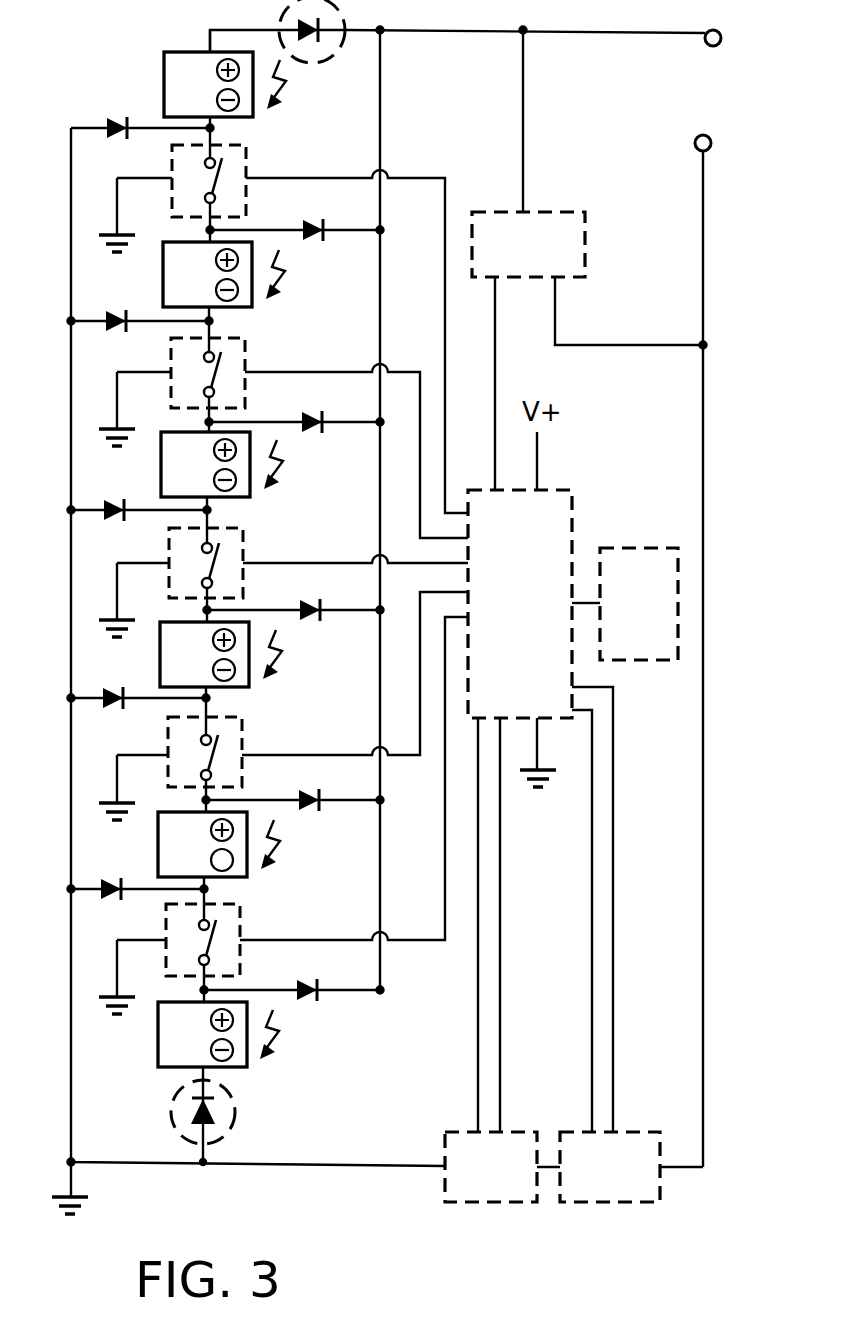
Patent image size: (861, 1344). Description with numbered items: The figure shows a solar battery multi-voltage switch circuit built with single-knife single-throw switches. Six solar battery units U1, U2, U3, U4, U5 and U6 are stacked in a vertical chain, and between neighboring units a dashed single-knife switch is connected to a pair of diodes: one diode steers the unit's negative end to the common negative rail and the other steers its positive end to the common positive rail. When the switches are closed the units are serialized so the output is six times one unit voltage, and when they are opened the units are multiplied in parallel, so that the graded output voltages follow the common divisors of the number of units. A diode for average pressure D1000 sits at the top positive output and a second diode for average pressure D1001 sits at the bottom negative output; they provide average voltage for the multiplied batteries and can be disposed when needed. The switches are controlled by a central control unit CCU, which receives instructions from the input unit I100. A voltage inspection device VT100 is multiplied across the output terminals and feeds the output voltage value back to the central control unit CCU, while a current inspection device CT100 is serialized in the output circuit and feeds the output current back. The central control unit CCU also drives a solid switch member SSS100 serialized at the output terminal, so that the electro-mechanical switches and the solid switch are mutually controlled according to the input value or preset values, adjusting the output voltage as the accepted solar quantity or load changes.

The battery unit U1 is at (227, 136).
The battery unit U2 is at (226, 337).
The battery unit U3 is at (226, 527).
The battery unit U4 is at (226, 717).
The battery unit U5 is at (226, 907).
The battery unit U6 is at (218, 1082).
The diode for average pressure D1000 is at (356, 31).
The diode for average pressure D1001 is at (248, 1123).
The voltage inspection device VT100 is at (528, 244).
The central control unit CCU is at (520, 604).
The input unit I100 is at (639, 604).
The current inspection device CT100 is at (491, 1167).
The solid switch member SSS100 is at (610, 1167).